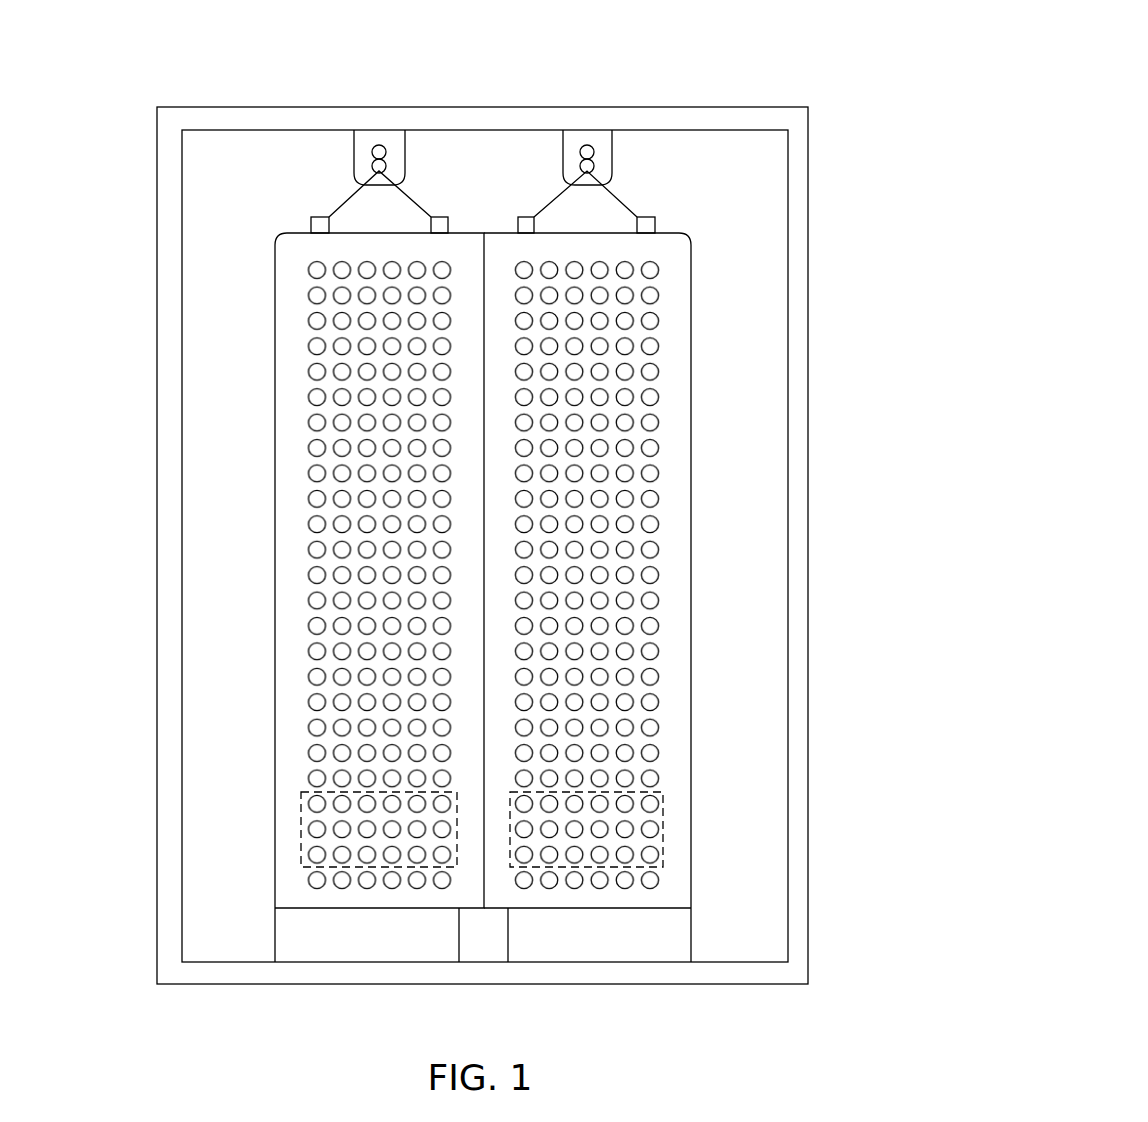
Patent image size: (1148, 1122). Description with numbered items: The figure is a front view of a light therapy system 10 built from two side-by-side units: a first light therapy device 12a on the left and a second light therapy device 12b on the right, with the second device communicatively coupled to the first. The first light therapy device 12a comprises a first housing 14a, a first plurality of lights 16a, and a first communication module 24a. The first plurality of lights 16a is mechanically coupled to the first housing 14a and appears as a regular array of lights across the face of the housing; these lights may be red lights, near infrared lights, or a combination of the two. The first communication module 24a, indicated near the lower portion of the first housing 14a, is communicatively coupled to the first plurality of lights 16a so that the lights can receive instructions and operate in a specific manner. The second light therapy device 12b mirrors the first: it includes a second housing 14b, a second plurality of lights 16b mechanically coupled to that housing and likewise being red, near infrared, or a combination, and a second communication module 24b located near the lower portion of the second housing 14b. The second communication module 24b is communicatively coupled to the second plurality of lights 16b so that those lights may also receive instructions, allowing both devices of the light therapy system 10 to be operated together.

The light therapy system 10 is at (710, 52).
The first light therapy device 12a is at (263, 629).
The second light therapy device 12b is at (721, 665).
The first housing 14a is at (302, 727).
The second housing 14b is at (670, 613).
The first plurality of lights 16a is at (307, 472).
The second plurality of lights 16b is at (668, 422).
The first communication module 24a is at (298, 842).
The second communication module 24b is at (665, 830).